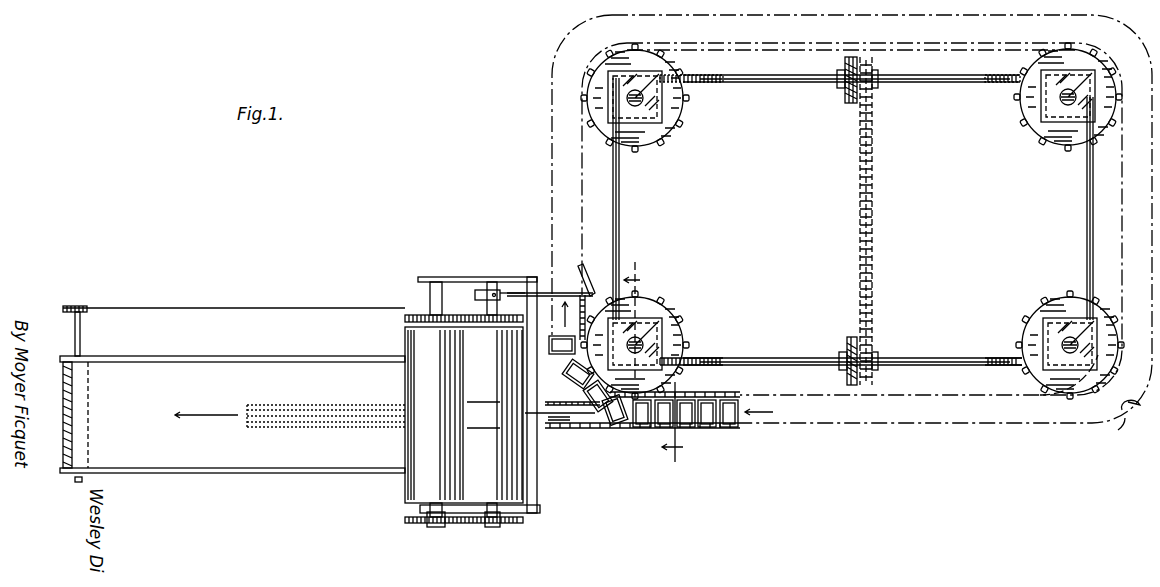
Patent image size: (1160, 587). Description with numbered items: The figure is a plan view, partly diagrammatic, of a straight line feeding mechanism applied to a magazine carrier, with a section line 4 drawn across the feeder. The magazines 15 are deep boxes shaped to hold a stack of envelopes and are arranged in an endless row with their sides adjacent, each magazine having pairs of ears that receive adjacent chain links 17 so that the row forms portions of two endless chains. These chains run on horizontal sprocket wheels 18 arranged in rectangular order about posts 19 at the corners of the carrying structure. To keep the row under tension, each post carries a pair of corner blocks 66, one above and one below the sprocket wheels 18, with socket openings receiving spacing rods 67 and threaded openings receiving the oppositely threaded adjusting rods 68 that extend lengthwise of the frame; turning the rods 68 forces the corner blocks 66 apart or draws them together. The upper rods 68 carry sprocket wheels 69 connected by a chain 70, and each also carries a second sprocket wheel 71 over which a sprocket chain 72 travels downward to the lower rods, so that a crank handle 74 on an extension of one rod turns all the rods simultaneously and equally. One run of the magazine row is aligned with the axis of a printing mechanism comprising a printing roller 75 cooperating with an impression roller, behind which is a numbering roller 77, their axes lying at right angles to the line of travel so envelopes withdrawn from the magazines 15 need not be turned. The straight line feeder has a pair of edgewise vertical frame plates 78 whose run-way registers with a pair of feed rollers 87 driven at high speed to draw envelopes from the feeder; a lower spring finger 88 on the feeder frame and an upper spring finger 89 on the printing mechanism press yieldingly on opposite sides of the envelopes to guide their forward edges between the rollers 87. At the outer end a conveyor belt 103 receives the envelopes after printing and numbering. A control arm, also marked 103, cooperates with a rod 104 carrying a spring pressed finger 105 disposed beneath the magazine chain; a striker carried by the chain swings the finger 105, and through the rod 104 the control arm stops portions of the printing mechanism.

The section line 4- 4 is at (653, 363).
The magazine 15 is at (725, 428).
The chain link 17 is at (706, 395).
The sprocket wheel 18 is at (672, 132).
The post 19 is at (633, 103).
The corner block 66 is at (660, 101).
The spacing rod 67 is at (621, 212).
The adjusting rod 68 is at (757, 83).
The sprocket wheel 69 is at (878, 87).
The chain 70 is at (872, 214).
The second sprocket wheel 71 is at (838, 92).
The sprocket chain 72 is at (851, 57).
The crank handle 74 is at (1119, 431).
The printing roller 75 is at (525, 487).
The numbering roller 77 is at (415, 340).
The frame plate 78 is at (600, 428).
The feed roller 87 is at (552, 416).
The lower spring finger 88 is at (572, 428).
The upper spring finger 89 is at (554, 408).
The conveyor belt 103 is at (481, 290).
The rod 104 is at (510, 290).
The spring pressed finger 105 is at (592, 279).